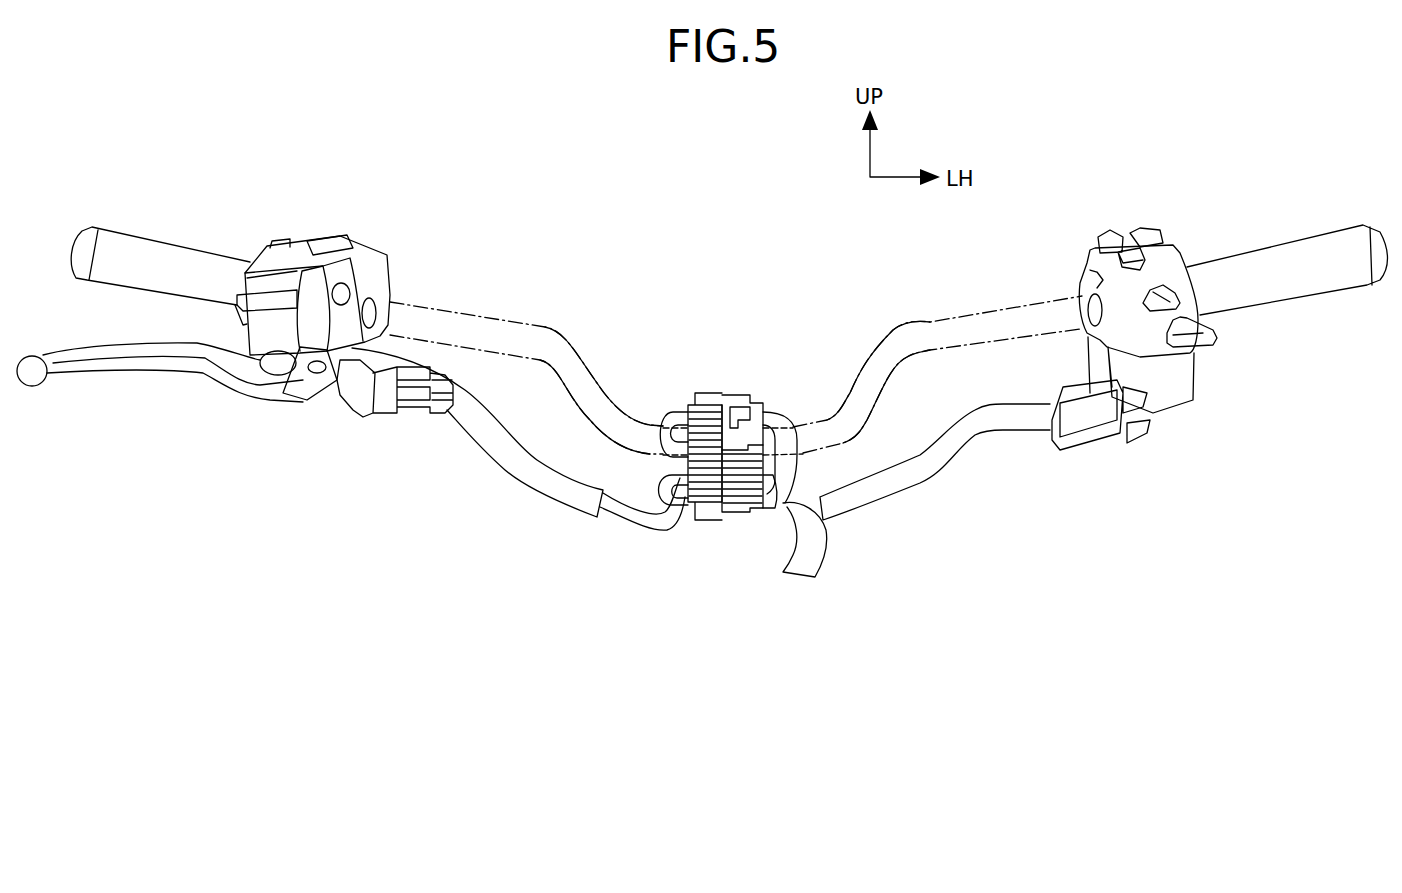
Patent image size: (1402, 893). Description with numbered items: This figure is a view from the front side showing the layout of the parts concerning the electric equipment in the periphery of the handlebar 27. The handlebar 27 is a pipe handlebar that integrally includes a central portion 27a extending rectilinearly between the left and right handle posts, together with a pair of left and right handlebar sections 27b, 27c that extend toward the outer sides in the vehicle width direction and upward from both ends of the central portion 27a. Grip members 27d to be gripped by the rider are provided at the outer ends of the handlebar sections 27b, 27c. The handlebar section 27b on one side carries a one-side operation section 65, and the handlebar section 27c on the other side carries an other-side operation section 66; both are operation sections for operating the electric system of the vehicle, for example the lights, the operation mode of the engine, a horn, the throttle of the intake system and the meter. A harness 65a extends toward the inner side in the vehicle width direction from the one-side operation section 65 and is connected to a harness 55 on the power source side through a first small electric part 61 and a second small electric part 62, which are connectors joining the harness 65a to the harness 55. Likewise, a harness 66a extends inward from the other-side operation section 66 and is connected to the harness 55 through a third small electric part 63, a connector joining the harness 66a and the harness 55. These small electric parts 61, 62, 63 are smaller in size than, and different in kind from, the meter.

The handlebar 27 is at (544, 322).
The central portion 27a is at (660, 427).
The handlebar section 27b is at (428, 306).
The handlebar section 27c is at (1003, 308).
The grip member 27d is at (160, 240).
The harness 55 is at (830, 558).
The first small electric part 61 is at (712, 495).
The second small electric part 62 is at (717, 500).
The third small electric part 63 is at (712, 393).
The one-side operation section 65 is at (278, 240).
The harness 65a is at (510, 483).
The other-side operation section 66 is at (1086, 250).
The harness 66a is at (953, 452).